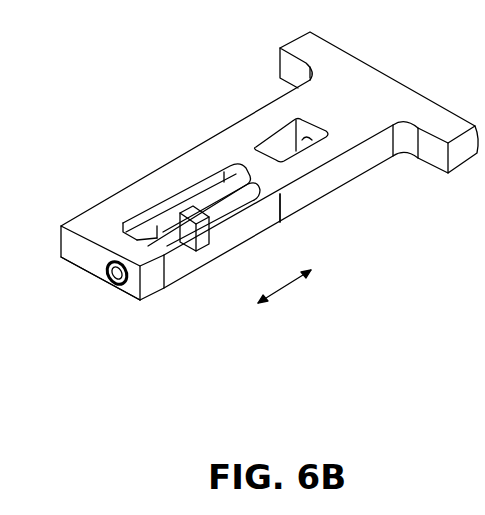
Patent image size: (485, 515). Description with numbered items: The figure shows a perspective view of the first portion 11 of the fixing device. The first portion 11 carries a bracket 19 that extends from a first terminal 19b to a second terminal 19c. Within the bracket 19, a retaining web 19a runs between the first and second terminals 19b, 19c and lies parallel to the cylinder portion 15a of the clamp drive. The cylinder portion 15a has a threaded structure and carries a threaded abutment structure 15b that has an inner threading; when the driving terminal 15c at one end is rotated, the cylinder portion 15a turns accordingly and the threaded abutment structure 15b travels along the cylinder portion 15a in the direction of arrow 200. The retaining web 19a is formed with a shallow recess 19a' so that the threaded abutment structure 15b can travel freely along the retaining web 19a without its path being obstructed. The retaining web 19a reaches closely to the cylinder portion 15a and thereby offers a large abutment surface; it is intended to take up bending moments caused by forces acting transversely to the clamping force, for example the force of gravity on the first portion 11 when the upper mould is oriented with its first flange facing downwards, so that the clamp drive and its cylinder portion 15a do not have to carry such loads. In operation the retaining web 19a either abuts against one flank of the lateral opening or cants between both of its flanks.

The first portion 11 is at (388, 200).
The bracket 19 is at (100, 181).
The retaining web 19a is at (187, 155).
The shallow recess 19a' is at (148, 139).
The first terminal 19b is at (153, 297).
The second terminal 19c is at (284, 204).
The cylinder portion 15a is at (228, 208).
The threaded abutment structure 15b is at (207, 247).
The driving terminal 15c is at (110, 284).
The arrow 200 is at (285, 287).